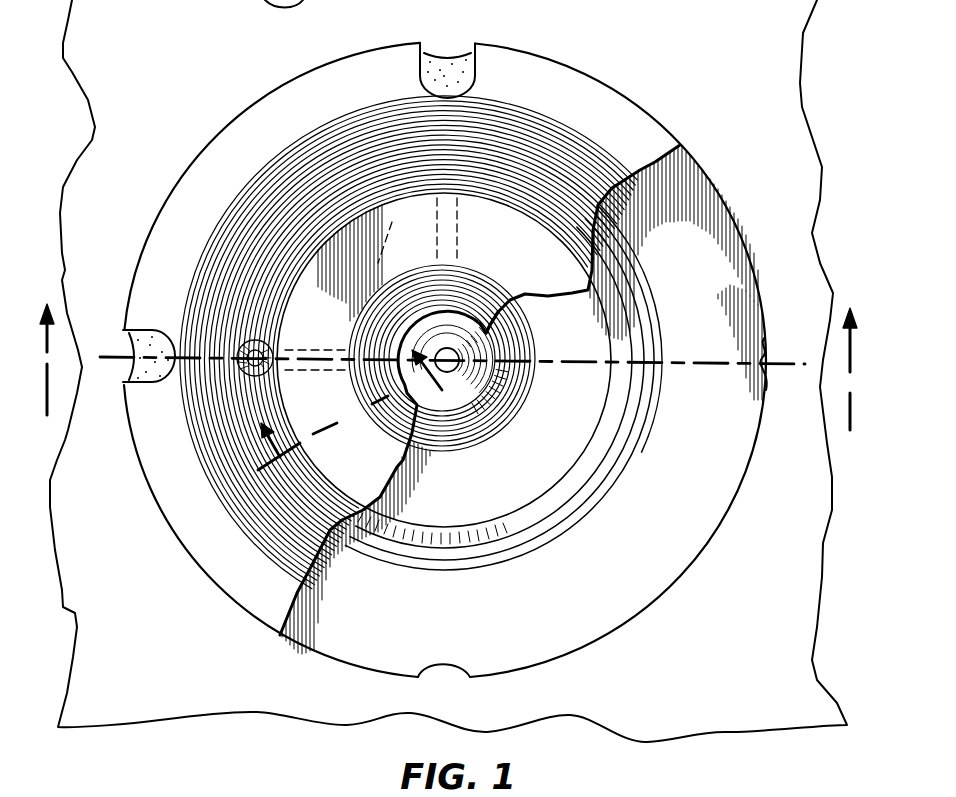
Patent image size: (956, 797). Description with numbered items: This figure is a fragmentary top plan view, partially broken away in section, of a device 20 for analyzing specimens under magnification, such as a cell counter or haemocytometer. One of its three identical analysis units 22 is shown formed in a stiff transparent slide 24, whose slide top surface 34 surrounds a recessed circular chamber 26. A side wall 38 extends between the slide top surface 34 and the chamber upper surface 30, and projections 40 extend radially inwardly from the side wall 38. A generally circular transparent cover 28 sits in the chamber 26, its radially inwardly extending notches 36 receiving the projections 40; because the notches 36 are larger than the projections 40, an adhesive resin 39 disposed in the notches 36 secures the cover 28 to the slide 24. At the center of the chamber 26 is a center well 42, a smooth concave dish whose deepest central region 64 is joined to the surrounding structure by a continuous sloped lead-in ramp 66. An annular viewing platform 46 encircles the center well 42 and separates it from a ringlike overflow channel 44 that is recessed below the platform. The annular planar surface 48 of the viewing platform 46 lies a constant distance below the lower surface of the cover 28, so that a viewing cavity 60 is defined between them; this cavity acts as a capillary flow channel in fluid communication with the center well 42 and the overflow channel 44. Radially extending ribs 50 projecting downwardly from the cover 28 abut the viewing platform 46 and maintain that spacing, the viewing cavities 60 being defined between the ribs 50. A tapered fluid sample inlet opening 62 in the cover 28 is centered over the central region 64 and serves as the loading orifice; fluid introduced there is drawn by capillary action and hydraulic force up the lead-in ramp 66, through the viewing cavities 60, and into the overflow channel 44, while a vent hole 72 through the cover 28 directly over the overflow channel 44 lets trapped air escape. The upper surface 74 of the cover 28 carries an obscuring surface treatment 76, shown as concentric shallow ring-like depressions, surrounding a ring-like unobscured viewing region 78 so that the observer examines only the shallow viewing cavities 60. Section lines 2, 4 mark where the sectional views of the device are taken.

The device 20 is at (820, 84).
The analysis unit 22 is at (733, 192).
The slide 24 is at (696, 691).
The chamber 26 is at (655, 597).
The cover 28 is at (296, 596).
The chamber upper surface 30 is at (528, 613).
The slide top surface 34 is at (730, 74).
The notches 36 is at (478, 70).
The side wall 38 is at (746, 248).
The adhesive resin 39 is at (478, 58).
The projections 40 is at (763, 362).
The center well 42 is at (504, 395).
The overflow channel 44 is at (613, 493).
The viewing platform 46 is at (512, 530).
The annular planar surface 48 is at (530, 465).
The ribs 50 is at (456, 245).
The viewing cavity 60 is at (392, 222).
The fluid sample inlet opening 62 is at (512, 343).
The central region 64 is at (515, 380).
The lead-in ramp 66 is at (550, 317).
The vent hole 72 is at (247, 343).
The upper surface 74 is at (585, 125).
The obscuring surface treatment 76 is at (480, 268).
The unobscured viewing region 78 is at (539, 288).
The section line 2- 2 is at (448, 383).
The section line 4- 4 is at (352, 422).